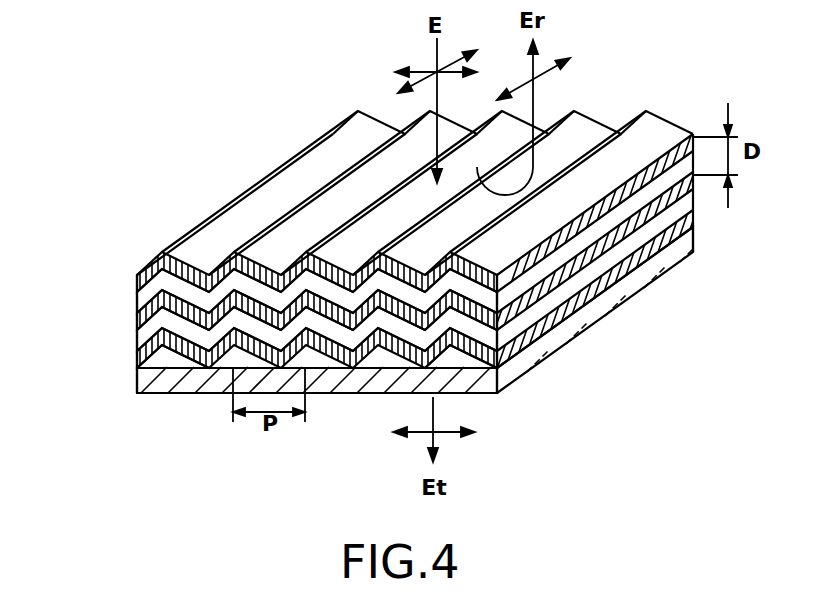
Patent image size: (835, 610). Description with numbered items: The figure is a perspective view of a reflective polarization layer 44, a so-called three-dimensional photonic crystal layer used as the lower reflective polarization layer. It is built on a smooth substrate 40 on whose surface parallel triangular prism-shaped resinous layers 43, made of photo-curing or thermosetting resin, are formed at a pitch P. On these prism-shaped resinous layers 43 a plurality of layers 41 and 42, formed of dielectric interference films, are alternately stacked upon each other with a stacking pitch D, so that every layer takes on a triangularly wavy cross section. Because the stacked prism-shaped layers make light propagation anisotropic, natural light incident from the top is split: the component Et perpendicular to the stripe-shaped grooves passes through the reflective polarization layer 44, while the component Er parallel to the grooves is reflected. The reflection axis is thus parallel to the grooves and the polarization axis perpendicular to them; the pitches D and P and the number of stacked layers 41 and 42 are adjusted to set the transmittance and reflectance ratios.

The substrate 40 is at (137, 387).
The layer 41 is at (133, 363).
The layer 42 is at (132, 347).
The resinous layer 43 is at (453, 360).
The reflective polarization layer 44 is at (57, 250).